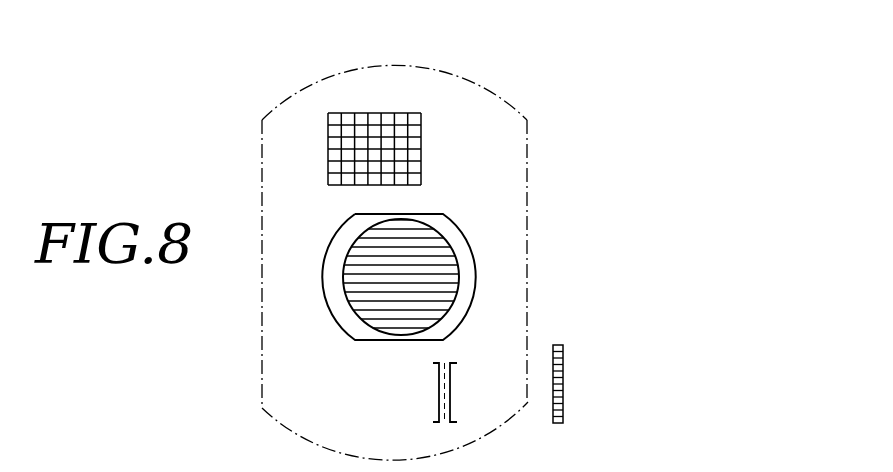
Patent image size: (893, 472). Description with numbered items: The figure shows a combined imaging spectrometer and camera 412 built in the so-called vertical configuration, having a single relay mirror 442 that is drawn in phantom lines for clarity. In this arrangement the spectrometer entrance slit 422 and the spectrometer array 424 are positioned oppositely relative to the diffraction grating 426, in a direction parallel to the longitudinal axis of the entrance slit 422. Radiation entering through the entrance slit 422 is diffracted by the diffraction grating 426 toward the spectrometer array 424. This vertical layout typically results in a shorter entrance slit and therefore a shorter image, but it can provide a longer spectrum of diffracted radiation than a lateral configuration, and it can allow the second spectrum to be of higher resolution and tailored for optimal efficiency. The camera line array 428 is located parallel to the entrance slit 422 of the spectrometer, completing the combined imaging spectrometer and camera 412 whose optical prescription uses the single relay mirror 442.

The combined imaging spectrometer and camera 412 is at (251, 72).
The relay mirror 442 is at (516, 106).
The spectrometer array 424 is at (392, 113).
The diffraction grating 426 is at (477, 265).
The spectrometer entrance slit 422 is at (452, 403).
The camera line array 428 is at (563, 368).